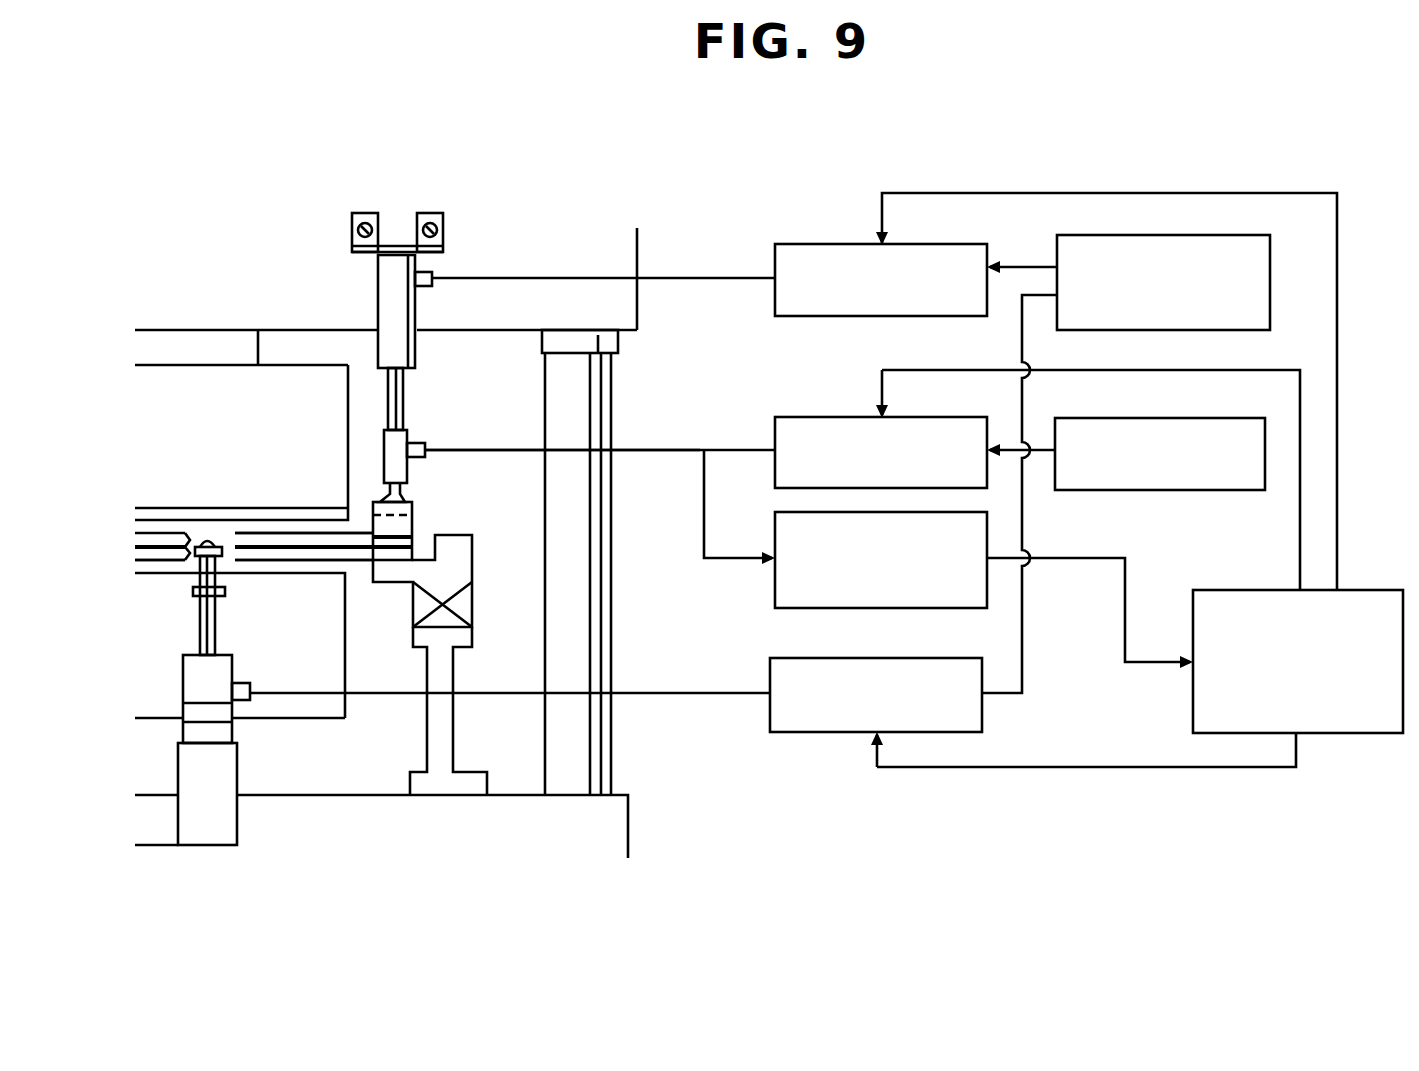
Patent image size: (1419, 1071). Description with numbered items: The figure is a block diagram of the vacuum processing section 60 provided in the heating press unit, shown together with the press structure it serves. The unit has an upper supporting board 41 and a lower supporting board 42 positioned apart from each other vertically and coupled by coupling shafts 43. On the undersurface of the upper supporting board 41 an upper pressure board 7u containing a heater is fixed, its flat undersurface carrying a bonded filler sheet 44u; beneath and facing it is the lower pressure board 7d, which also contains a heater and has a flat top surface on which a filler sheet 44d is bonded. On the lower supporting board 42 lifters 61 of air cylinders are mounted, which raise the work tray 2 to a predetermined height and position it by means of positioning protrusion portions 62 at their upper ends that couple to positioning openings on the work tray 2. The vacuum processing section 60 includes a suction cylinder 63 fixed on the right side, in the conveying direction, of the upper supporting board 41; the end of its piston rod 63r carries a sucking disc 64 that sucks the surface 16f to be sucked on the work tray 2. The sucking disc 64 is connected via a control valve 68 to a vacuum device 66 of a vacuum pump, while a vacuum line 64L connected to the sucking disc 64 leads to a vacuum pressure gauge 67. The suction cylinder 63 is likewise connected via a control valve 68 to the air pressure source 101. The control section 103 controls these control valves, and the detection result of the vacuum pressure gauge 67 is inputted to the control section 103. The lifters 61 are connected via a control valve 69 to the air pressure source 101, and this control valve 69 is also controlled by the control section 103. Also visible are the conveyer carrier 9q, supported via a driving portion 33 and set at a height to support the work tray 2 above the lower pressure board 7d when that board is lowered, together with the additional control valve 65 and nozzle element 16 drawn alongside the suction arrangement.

The vacuum processing section 60 is at (1124, 157).
The upper supporting board 41 is at (637, 245).
The control valve 68 is at (823, 244).
The air pressure source 101 is at (1270, 300).
The filler sheet 44u is at (198, 508).
The upper pressure board 7u is at (291, 365).
The suction cylinder 63 is at (415, 345).
The piston rod 63r is at (405, 405).
The control valve 65 is at (796, 417).
The vacuum line 64L is at (658, 448).
The positioning protrusion portion 62 is at (207, 543).
The work tray 2 is at (308, 538).
The surface to be sucked 16f is at (380, 500).
The sucking disc 64 is at (412, 498).
The suction nozzle 16 is at (412, 525).
The conveyer carrier 9q is at (472, 563).
The driving portion 33 is at (472, 603).
The vacuum pressure gauge 67 is at (770, 578).
The vacuum device 66 is at (1175, 492).
The control section 103 is at (1388, 588).
The filler sheet 44d is at (160, 575).
The lifter 61 is at (172, 666).
The coupling shaft 43 is at (612, 757).
The control valve 69 is at (805, 735).
The lower pressure board 7d is at (320, 725).
The lower supporting board 42 is at (630, 845).